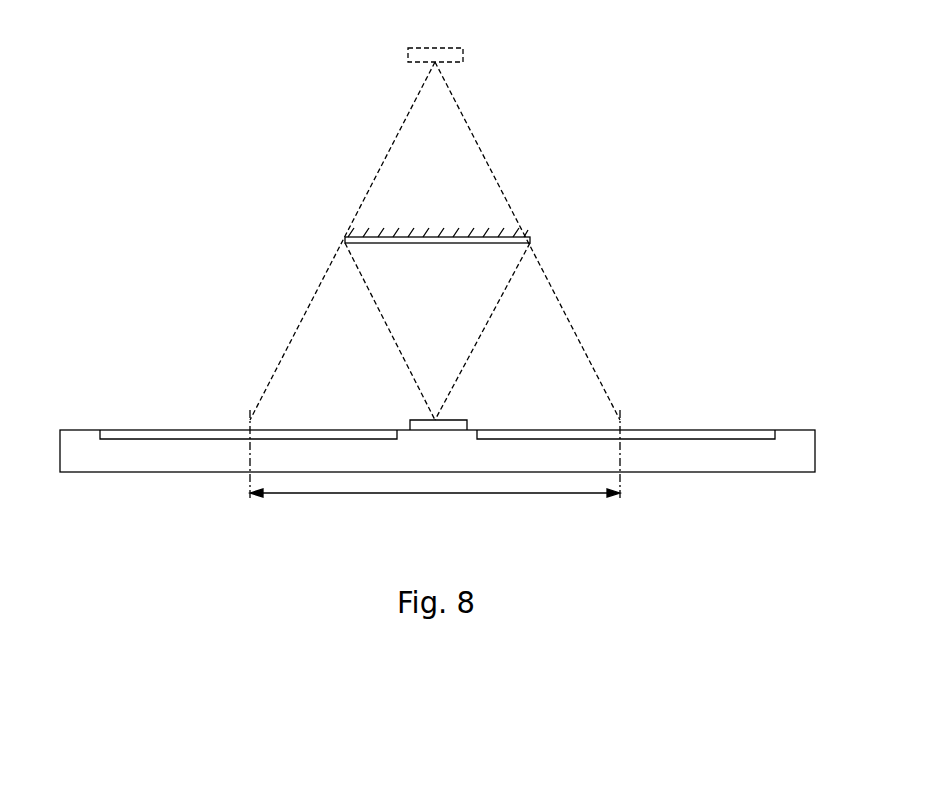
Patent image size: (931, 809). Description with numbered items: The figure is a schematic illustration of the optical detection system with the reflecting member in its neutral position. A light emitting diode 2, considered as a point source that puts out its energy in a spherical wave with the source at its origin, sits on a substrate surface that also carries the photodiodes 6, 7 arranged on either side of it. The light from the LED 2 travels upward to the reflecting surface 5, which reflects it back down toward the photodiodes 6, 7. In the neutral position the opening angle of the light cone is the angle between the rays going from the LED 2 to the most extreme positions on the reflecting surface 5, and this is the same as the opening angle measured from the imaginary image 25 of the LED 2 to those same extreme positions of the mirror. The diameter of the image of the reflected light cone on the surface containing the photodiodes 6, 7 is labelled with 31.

The imaginary image of the LED 25 is at (448, 57).
The reflecting surface 5 is at (476, 238).
The light emitting diode (LED) 2 is at (432, 423).
The photodiode 6 is at (183, 437).
The photodiode 7 is at (673, 437).
The diameter of the image of the reflected light cone 31 is at (435, 466).